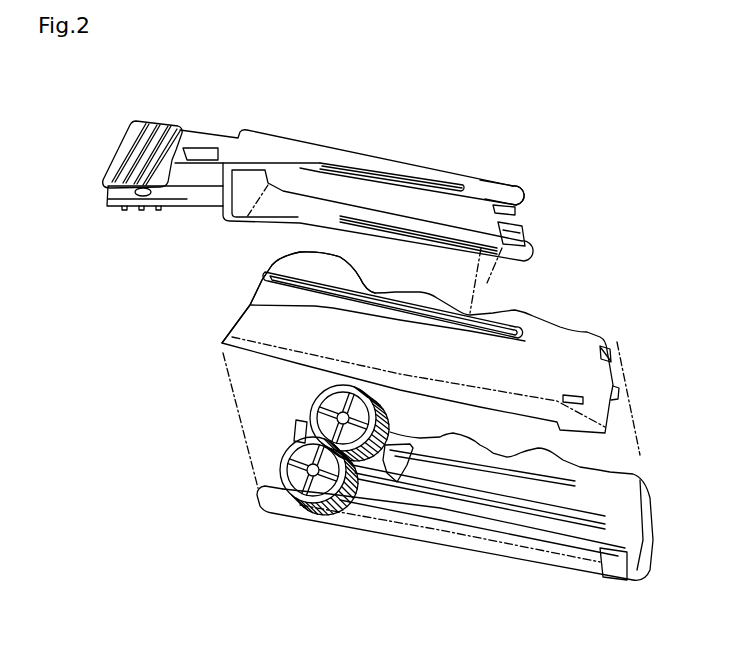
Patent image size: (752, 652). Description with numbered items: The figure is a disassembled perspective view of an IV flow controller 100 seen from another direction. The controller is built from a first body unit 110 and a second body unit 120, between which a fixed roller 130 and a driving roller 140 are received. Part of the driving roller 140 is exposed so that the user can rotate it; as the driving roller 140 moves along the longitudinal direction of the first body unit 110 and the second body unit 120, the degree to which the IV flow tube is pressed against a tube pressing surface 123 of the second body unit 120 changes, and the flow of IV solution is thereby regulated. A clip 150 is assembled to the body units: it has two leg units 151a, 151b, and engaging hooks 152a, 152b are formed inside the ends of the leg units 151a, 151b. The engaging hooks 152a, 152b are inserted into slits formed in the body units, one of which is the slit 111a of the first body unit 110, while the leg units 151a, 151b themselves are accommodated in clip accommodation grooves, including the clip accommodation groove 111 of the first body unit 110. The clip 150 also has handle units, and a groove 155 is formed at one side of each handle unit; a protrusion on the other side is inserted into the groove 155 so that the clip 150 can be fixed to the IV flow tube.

The IV flow controller 100 is at (518, 79).
The first body unit 110 is at (588, 307).
The clip accommodation groove 111 is at (263, 292).
The slit 111a is at (507, 330).
The second body unit 120 is at (483, 568).
The tube pressing surface 123 is at (407, 483).
The fixed roller 130 is at (298, 441).
The driving roller 140 is at (268, 463).
The clip 150 is at (370, 140).
The leg unit 151a is at (433, 227).
The leg unit 151b is at (488, 187).
The engaging hook 152a is at (524, 232).
The engaging hook 152b is at (517, 212).
The groove 155 is at (138, 198).